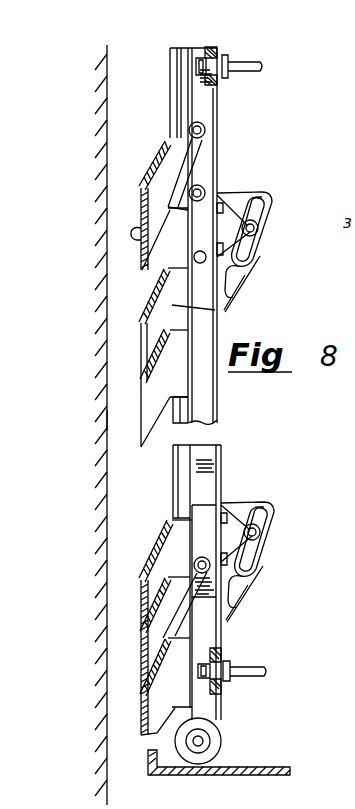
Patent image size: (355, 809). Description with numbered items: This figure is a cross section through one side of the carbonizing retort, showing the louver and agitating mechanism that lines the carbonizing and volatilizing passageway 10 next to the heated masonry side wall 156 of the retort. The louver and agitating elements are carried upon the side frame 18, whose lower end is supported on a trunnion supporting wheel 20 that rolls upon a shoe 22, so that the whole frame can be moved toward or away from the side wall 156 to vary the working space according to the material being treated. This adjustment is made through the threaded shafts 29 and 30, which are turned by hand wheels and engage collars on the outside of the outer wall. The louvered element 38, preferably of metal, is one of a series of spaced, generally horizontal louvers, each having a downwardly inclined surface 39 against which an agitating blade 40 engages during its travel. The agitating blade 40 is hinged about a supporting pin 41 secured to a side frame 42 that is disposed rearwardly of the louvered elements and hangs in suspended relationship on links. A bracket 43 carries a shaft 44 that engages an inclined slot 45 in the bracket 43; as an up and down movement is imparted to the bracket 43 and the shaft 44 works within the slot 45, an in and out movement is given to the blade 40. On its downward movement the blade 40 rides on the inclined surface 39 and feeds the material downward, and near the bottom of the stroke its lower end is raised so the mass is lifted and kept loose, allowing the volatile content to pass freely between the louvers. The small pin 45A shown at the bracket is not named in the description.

The carbonizing and volatilizing passageway 10 is at (107, 416).
The side wall 156 is at (103, 333).
The side frame 18 is at (210, 100).
The trunnion supporting wheel 20 is at (210, 751).
The shoe 22 is at (205, 777).
The shaft 29 is at (242, 669).
The shaft 30 is at (240, 67).
The louvered element 38 is at (173, 365).
The downwardly inclined surface 39 is at (152, 170).
The agitating blade 40 is at (187, 202).
The supporting pin 41 is at (206, 128).
The side frame 42 is at (206, 259).
The bracket 43 is at (255, 204).
The shaft 44 is at (258, 228).
The inclined slot 45 is at (250, 249).
The bracket pin 45A is at (268, 218).